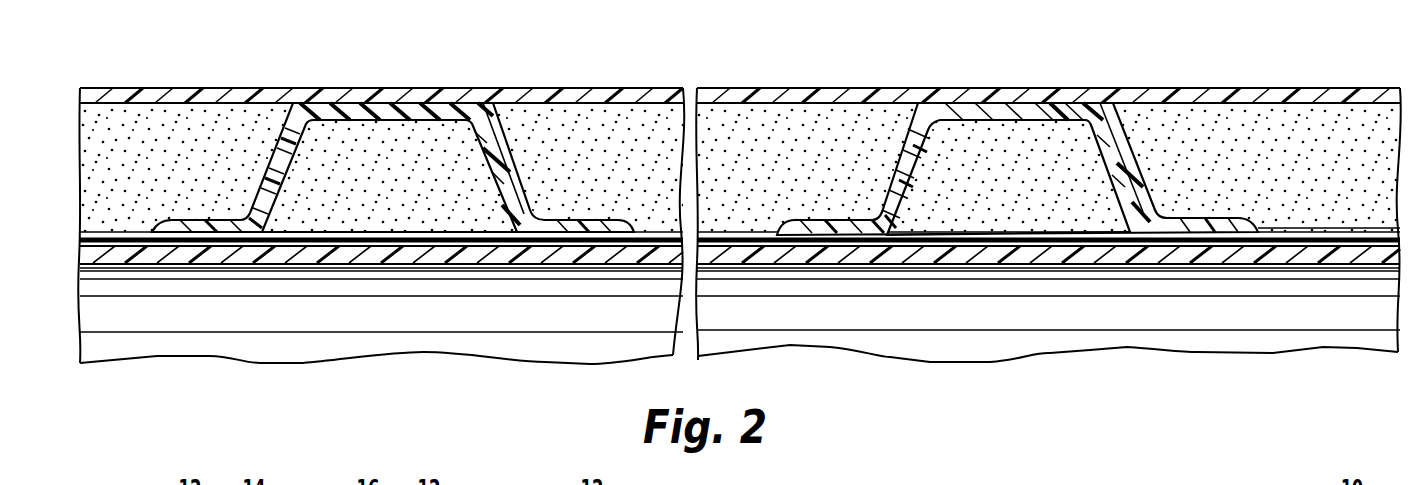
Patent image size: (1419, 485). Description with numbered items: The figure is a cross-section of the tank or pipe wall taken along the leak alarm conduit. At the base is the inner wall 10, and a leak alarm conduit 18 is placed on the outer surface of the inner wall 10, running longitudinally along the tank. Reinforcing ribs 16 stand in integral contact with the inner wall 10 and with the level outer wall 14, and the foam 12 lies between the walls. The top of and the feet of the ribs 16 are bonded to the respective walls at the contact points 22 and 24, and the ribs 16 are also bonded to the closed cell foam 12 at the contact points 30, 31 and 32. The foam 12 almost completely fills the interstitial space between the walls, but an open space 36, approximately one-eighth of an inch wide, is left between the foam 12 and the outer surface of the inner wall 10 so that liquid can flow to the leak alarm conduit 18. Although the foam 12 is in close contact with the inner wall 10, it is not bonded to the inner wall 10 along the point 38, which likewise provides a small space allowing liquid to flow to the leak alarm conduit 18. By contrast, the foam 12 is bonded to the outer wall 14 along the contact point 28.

The inner wall 10 is at (398, 253).
The foam 12 is at (205, 120).
The outer wall 14 is at (392, 100).
The reinforcing ribs 16 is at (465, 110).
The leak alarm conduit 18 is at (460, 240).
The contact point 22 is at (835, 245).
The contact point 24 is at (1197, 265).
The contact point 28 is at (1270, 90).
The contact point 30 is at (912, 190).
The contact point 31 is at (990, 120).
The contact point 32 is at (1127, 200).
The open space 36 is at (647, 232).
The point 38 is at (1006, 230).